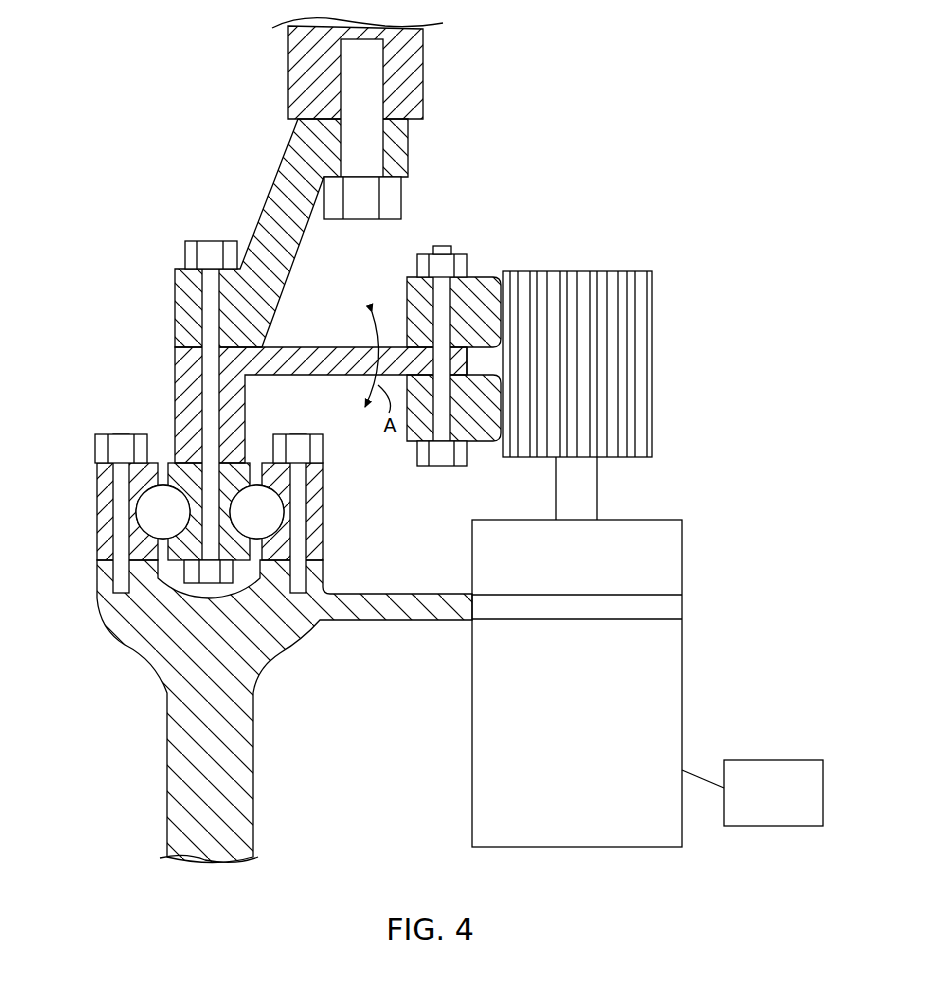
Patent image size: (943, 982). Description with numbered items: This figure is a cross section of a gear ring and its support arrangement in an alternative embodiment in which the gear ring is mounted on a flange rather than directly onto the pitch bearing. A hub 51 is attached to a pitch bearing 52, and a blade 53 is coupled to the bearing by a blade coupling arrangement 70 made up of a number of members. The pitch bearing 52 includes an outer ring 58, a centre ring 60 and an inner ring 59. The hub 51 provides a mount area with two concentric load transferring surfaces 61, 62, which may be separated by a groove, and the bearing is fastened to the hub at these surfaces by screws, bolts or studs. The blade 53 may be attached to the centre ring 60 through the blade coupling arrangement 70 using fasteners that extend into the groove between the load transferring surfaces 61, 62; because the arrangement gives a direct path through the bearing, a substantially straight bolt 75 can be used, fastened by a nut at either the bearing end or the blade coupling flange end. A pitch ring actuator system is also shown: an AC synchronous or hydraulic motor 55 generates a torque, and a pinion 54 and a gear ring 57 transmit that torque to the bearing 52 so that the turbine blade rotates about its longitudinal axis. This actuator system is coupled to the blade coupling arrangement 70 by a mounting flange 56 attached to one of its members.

The hub 51 is at (181, 758).
The pitch bearing 52 is at (200, 547).
The blade 53 is at (302, 75).
The pinion 54 is at (640, 355).
The motor 55 is at (667, 682).
The mounting flange 56 is at (327, 347).
The gear ring 57 is at (481, 434).
The outer ring 58 is at (132, 477).
The inner ring 59 is at (323, 515).
The centre ring 60 is at (190, 482).
The load transferring surface 61 is at (142, 567).
The load transferring surface 62 is at (295, 567).
The blade coupling arrangement 70 is at (198, 205).
The straight bolt 75 is at (208, 296).